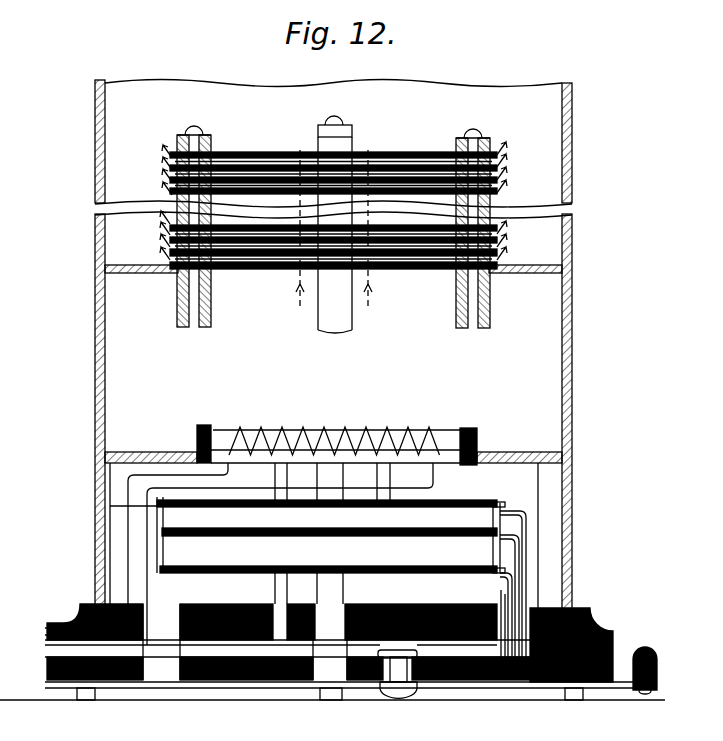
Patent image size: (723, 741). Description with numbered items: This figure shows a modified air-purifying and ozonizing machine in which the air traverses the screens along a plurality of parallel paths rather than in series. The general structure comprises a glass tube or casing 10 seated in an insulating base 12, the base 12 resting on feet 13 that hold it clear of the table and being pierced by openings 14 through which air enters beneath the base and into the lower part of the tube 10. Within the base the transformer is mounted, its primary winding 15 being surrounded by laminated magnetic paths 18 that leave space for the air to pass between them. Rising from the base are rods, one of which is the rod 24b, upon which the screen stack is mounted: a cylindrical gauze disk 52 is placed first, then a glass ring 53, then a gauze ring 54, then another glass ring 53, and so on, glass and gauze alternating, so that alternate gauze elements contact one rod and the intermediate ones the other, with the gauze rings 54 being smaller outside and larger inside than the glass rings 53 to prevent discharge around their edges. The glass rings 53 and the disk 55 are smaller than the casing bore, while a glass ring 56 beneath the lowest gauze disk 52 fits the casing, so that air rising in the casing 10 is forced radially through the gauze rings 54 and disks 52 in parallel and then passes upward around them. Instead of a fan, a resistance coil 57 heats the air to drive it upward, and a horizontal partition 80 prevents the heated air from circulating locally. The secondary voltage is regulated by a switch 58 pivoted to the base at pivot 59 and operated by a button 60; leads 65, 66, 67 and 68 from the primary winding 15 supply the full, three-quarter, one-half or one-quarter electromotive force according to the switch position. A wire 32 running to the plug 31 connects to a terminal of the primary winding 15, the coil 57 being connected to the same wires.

The glass tube 10 is at (577, 325).
The insulating base 12 is at (613, 633).
The feet 13 is at (80, 700).
The openings 14 is at (163, 627).
The primary winding 15 is at (467, 515).
The magnetic paths 18 is at (497, 477).
The rod 24b is at (473, 332).
The plug 31 is at (45, 632).
The wire 32 is at (43, 640).
The gauze disk 52 is at (500, 155).
The glass ring 53 is at (502, 233).
The gauze ring 54 is at (500, 192).
The disk 55 is at (432, 152).
The glass ring 56 is at (414, 273).
The resistance coil 57 is at (362, 432).
The switch 58 is at (622, 687).
The pivot 59 is at (398, 672).
The button 60 is at (657, 667).
The lead 65 is at (507, 595).
The lead 66 is at (513, 575).
The lead 67 is at (520, 547).
The lead 68 is at (527, 525).
The horizontal partition 80 is at (139, 453).